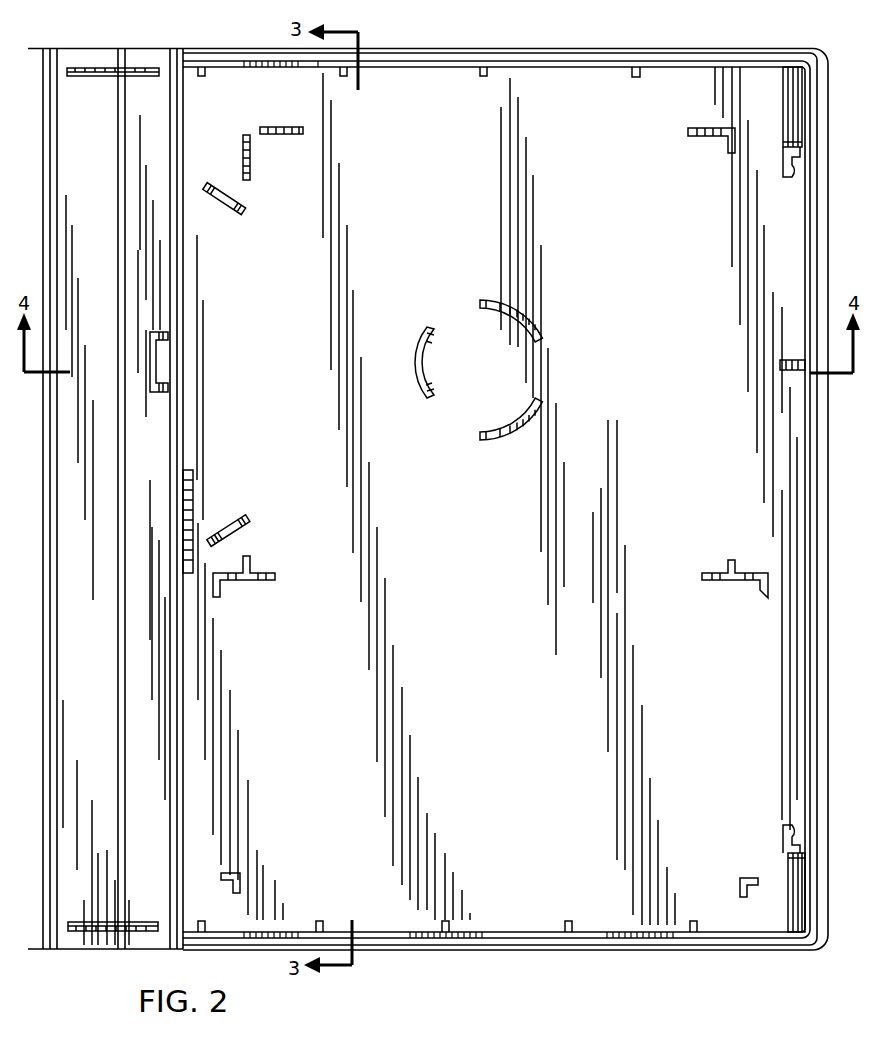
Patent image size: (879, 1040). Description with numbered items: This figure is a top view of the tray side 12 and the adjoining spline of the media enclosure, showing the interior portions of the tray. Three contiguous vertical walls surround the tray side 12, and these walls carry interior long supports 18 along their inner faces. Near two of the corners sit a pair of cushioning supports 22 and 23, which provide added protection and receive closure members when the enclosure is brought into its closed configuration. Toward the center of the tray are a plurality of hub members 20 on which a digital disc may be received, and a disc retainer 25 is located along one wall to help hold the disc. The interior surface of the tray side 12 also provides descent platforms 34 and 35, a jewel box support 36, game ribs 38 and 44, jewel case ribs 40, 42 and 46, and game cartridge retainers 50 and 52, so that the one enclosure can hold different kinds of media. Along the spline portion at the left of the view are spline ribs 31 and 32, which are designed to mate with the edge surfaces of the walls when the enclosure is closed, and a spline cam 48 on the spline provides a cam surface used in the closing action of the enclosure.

The tray side 12 is at (636, 241).
The long supports 18 is at (632, 72).
The hub members 20 is at (415, 358).
The cushioning support 22 is at (787, 97).
The cushioning support 23 is at (788, 908).
The disc retainer 25 is at (795, 358).
The spline rib 31 is at (150, 932).
The spline rib 32 is at (95, 76).
The descent platform 34 is at (232, 193).
The descent platform 35 is at (232, 522).
The jewel box support 36 is at (183, 530).
The game rib 38 is at (237, 581).
The jewel case rib 40 is at (243, 141).
The jewel case rib 42 is at (276, 127).
The game rib 44 is at (745, 580).
The jewel case rib 46 is at (717, 128).
The spline cam 48 is at (155, 360).
The game cartridge retainer 50 is at (750, 877).
The game cartridge retainer 52 is at (240, 878).